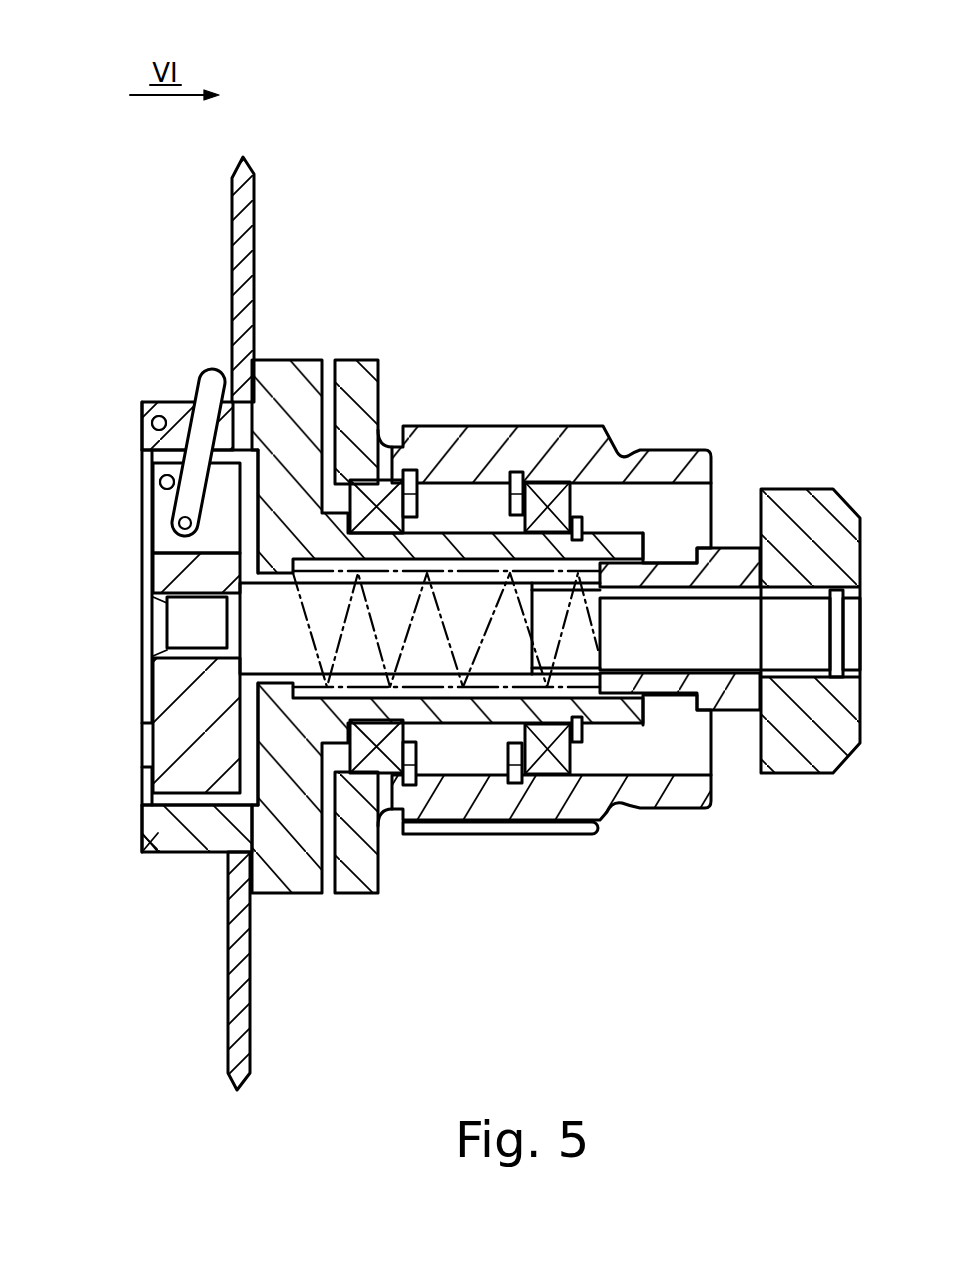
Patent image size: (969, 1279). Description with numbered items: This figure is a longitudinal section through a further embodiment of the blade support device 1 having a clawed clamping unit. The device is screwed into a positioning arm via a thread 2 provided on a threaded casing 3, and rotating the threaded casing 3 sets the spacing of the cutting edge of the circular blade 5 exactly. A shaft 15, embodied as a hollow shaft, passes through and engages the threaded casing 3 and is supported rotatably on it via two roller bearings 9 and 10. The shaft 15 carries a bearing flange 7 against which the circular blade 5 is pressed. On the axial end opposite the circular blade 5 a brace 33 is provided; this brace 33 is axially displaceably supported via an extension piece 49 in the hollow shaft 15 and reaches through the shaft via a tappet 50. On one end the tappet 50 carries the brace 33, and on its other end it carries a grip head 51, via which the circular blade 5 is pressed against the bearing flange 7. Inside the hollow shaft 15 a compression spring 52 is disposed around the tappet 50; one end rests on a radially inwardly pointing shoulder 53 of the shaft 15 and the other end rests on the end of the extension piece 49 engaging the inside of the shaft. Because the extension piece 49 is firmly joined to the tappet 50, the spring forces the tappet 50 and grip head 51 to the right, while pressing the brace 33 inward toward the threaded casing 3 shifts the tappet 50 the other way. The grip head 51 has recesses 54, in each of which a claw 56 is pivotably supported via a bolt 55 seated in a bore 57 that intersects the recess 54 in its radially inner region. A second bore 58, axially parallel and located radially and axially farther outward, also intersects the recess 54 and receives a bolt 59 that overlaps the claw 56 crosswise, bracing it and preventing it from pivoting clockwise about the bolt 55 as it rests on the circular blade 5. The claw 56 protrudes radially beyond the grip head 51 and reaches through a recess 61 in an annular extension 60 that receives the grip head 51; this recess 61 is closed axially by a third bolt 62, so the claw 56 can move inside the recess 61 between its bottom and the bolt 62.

The blade support device 1 is at (510, 240).
The thread 2 is at (533, 823).
The threaded casing 3 is at (483, 457).
The circular blade 5 is at (243, 178).
The bearing flange 7 is at (283, 390).
The roller bearing 9 is at (400, 478).
The roller bearing 10 is at (600, 427).
The shaft 15 is at (455, 707).
The brace 33 is at (808, 745).
The extension piece 49 is at (733, 560).
The tappet 50 is at (690, 637).
The grip head 51 is at (190, 806).
The compression spring 52 is at (487, 640).
The shoulder 53 is at (300, 693).
The recess 54 is at (166, 541).
The bolt 55 is at (141, 523).
The claw 56 is at (208, 376).
The bore 57 is at (167, 482).
The bore 58 is at (142, 477).
The bolt 59 is at (159, 423).
The annular extension 60 is at (142, 852).
The recess 61 is at (166, 402).
The bolt 62 is at (142, 402).